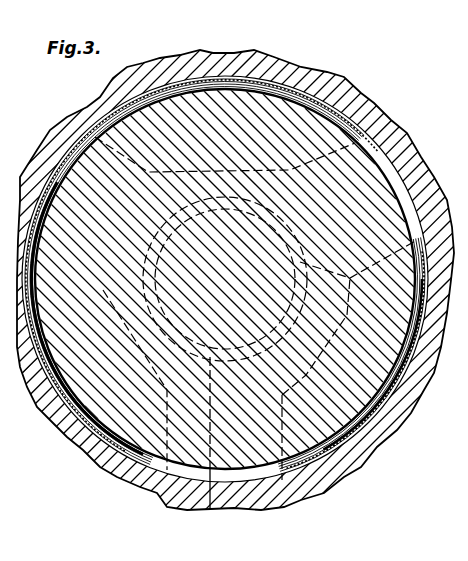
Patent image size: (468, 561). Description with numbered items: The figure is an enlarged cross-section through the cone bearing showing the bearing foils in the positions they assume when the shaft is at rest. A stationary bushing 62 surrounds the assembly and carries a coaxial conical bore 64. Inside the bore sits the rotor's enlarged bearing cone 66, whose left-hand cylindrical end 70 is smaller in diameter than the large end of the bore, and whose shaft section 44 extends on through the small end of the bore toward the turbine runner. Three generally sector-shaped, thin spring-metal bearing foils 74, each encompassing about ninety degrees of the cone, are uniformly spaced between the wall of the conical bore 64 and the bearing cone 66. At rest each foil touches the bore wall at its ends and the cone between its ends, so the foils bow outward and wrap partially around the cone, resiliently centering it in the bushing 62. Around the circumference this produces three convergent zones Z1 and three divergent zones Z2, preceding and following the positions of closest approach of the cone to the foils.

The bushing 62 is at (347, 90).
The conical bore 64 is at (294, 90).
The bearing cone 66 is at (371, 384).
The cylindrical end 70 is at (392, 350).
The bearing foils 74 is at (348, 108).
The shaft section 44 is at (207, 510).
The convergent zones Z1 is at (100, 127).
The divergent zones Z2 is at (365, 133).